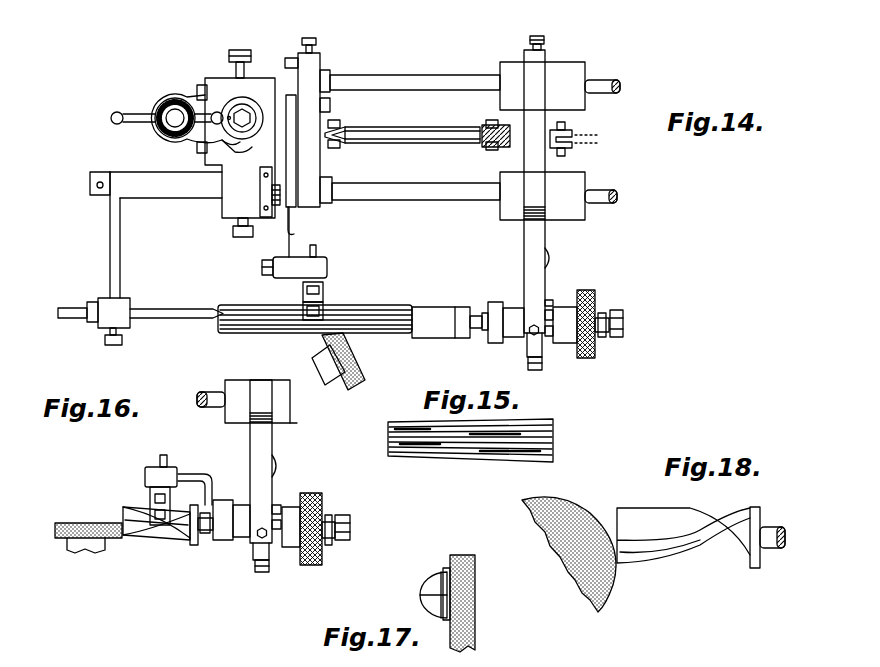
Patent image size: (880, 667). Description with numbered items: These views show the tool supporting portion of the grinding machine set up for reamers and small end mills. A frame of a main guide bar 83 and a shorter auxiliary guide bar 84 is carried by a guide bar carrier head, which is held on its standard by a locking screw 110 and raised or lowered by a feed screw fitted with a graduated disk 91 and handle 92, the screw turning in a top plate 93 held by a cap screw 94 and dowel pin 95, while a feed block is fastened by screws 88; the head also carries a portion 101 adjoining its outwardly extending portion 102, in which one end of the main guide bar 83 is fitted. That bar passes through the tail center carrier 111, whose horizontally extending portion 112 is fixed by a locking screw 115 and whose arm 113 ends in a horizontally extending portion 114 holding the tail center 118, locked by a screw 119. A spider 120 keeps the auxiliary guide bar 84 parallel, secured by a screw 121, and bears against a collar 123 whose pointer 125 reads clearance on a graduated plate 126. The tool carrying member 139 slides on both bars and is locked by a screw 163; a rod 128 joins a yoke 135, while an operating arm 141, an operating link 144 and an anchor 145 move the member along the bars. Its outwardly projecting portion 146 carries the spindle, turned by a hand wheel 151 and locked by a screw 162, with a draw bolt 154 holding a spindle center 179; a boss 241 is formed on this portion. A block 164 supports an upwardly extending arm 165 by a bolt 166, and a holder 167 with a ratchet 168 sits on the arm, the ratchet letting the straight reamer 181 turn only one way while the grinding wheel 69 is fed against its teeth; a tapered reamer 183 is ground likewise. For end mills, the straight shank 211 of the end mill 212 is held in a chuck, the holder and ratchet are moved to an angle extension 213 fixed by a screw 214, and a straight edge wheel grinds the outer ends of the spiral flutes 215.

In FIG. 14, the grinding wheel 69 is at (352, 358).
In FIG. 16, the grinding wheel 69 is at (85, 523).
In FIG. 17, the grinding wheel 69 is at (476, 626).
In FIG. 18, the grinding wheel 69 is at (590, 588).
In FIG. 14, the main guide bar 83 is at (437, 193).
In FIG. 14, the auxiliary guide bar 84 is at (392, 76).
In FIG. 14, the screws 88 is at (200, 85).
In FIG. 14, the graduated disk 91 is at (150, 112).
In FIG. 14, the handle 92 is at (111, 119).
In FIG. 14, the top plate 93 is at (162, 100).
In FIG. 14, the cap screw 94 is at (237, 133).
In FIG. 14, the dowel pin 95 is at (243, 146).
In FIG. 14, the head housing 101 is at (172, 138).
In FIG. 14, the outwardly extending portion 102 is at (240, 214).
In FIG. 14, the locking screw 110 is at (240, 50).
In FIG. 14, the tail center carrier 111 is at (133, 220).
In FIG. 14, the horizontally extending portion 112 is at (166, 199).
In FIG. 14, the arm 113 is at (110, 240).
In FIG. 14, the horizontally extending portion 114 is at (76, 319).
In FIG. 14, the locking screw 115 is at (90, 182).
In FIG. 14, the tail center 118 is at (181, 318).
In FIG. 14, the screw 119 is at (114, 343).
In FIG. 14, the spider 120 is at (322, 180).
In FIG. 14, the screw 121 is at (314, 43).
In FIG. 14, the collar 123 is at (300, 208).
In FIG. 14, the pointer 125 is at (296, 232).
In FIG. 14, the graduated plate 126 is at (238, 237).
In FIG. 14, the rod 128 is at (575, 133).
In FIG. 14, the yoke 135 is at (567, 152).
In FIG. 14, the tool carrying member 139 is at (550, 283).
In FIG. 14, the operating arm 141 is at (481, 141).
In FIG. 14, the operating link 144 is at (392, 128).
In FIG. 14, the anchor 145 is at (350, 141).
In FIG. 14, the outwardly projecting portion 146 is at (524, 243).
In FIG. 14, the hand wheel 151 is at (596, 300).
In FIG. 16, the hand wheel 151 is at (322, 502).
In FIG. 14, the draw bolt 154 is at (624, 321).
In FIG. 16, the draw bolt 154 is at (350, 526).
In FIG. 14, the screw 162 is at (270, 262).
In FIG. 14, the screw 163 is at (530, 40).
In FIG. 14, the block 164 is at (528, 336).
In FIG. 14, the arm 165 is at (496, 338).
In FIG. 16, the arm 165 is at (242, 510).
In FIG. 14, the bolt 166 is at (562, 345).
In FIG. 14, the holder 167 is at (300, 287).
In FIG. 14, the ratchet 168 is at (312, 321).
In FIG. 16, the ratchet 168 is at (144, 495).
In FIG. 14, the spindle center 179 is at (485, 311).
In FIG. 14, the straight reamer 181 is at (362, 311).
In FIG. 15, the tapered reamer 183 is at (440, 457).
In FIG. 16, the straight shank 211 is at (195, 546).
In FIG. 18, the straight shank 211 is at (762, 560).
In FIG. 16, the end mill 212 is at (162, 542).
In FIG. 17, the end mill 212 is at (419, 595).
In FIG. 18, the end mill 212 is at (710, 565).
In FIG. 16, the angle extension 213 is at (201, 473).
In FIG. 16, the screw 214 is at (213, 502).
In FIG. 16, the spiral flutes 215 is at (131, 537).
In FIG. 17, the spiral flutes 215 is at (441, 573).
In FIG. 18, the spiral flutes 215 is at (662, 560).
In FIG. 14, the boss 241 is at (550, 258).
In FIG. 16, the boss 241 is at (279, 465).